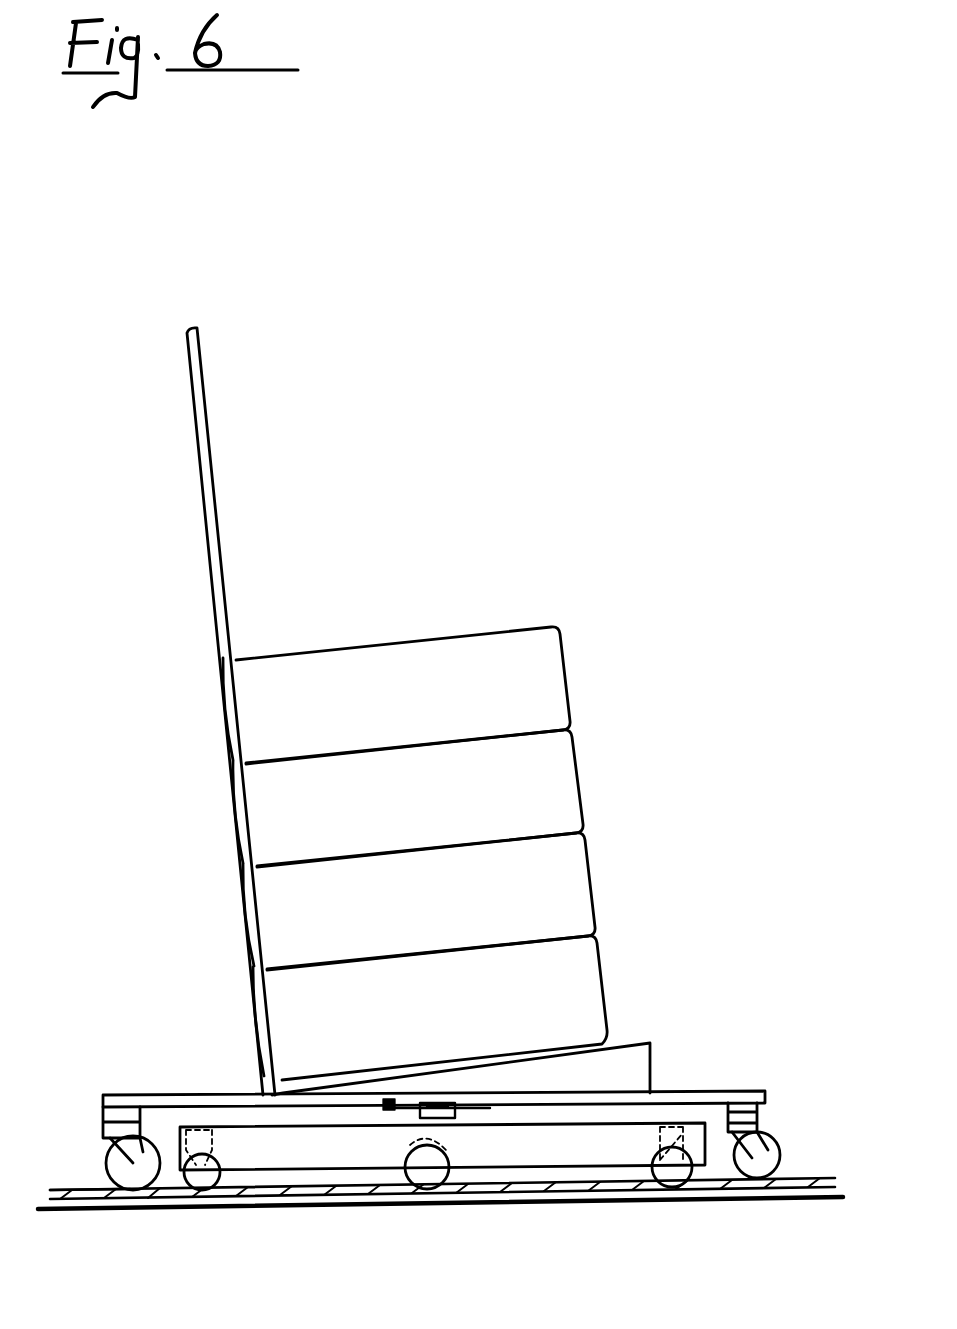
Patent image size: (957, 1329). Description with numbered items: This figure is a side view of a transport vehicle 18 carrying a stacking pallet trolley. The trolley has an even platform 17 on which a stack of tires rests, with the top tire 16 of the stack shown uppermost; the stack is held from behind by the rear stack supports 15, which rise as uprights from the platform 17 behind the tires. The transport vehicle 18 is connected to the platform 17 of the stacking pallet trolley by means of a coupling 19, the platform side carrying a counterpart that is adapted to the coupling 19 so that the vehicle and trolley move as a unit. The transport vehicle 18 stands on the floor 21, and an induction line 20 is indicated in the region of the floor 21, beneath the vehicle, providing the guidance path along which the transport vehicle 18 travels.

The rear stack supports 15 is at (210, 424).
The top tire of the stack 16 is at (467, 628).
The platform 17 is at (383, 1100).
The transport vehicle 18 is at (610, 1145).
The coupling 19 is at (463, 1107).
The induction line 20 is at (822, 1186).
The floor 21 is at (75, 1190).